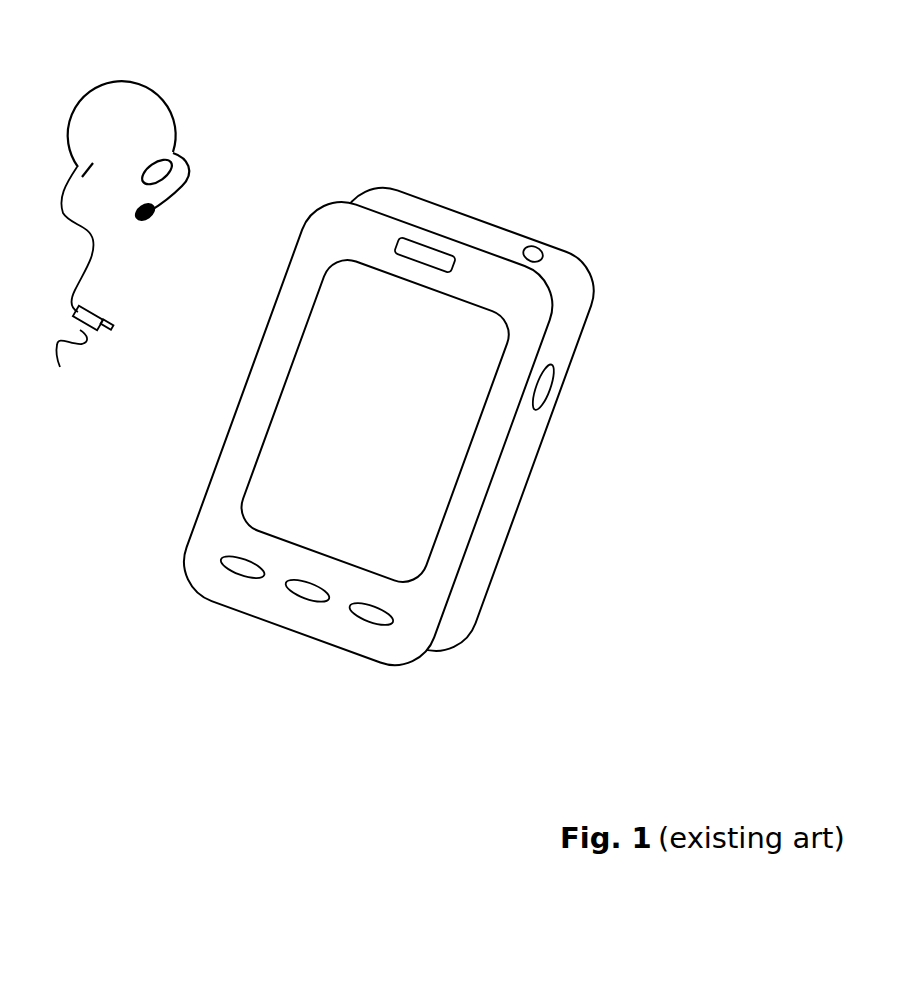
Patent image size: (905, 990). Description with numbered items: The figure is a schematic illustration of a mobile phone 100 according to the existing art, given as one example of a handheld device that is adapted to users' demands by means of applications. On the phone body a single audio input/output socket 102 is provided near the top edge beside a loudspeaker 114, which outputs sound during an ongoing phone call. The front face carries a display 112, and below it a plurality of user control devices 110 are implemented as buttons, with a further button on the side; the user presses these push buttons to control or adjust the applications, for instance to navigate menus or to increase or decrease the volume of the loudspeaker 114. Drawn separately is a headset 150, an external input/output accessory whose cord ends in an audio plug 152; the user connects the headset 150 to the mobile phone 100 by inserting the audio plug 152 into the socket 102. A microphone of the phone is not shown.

The mobile phone 100 is at (437, 105).
The audio input/output socket 102 is at (534, 247).
The user control devices 110 is at (544, 388).
The display 112 is at (375, 421).
The loudspeaker 114 is at (428, 253).
The headset 150 is at (169, 79).
The audio plug 152 is at (71, 361).